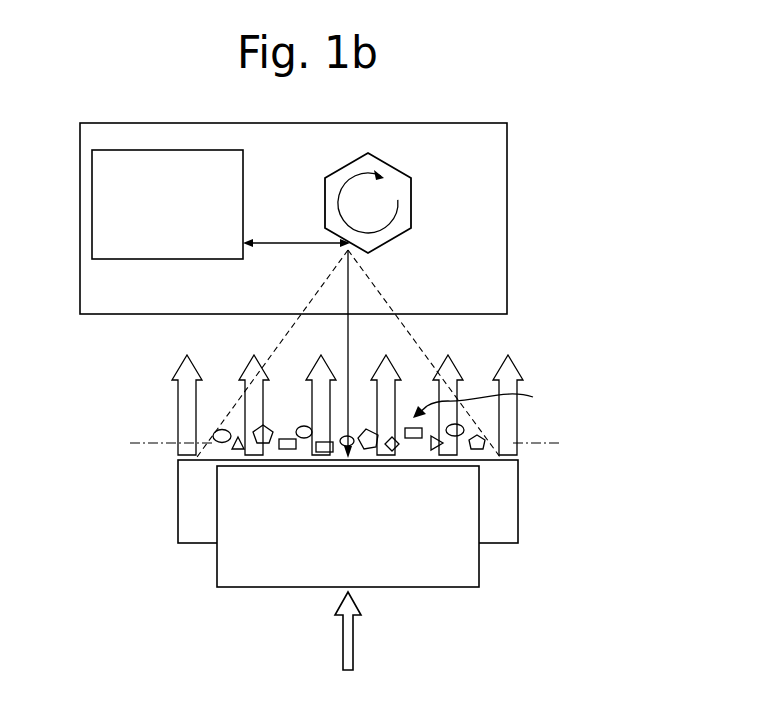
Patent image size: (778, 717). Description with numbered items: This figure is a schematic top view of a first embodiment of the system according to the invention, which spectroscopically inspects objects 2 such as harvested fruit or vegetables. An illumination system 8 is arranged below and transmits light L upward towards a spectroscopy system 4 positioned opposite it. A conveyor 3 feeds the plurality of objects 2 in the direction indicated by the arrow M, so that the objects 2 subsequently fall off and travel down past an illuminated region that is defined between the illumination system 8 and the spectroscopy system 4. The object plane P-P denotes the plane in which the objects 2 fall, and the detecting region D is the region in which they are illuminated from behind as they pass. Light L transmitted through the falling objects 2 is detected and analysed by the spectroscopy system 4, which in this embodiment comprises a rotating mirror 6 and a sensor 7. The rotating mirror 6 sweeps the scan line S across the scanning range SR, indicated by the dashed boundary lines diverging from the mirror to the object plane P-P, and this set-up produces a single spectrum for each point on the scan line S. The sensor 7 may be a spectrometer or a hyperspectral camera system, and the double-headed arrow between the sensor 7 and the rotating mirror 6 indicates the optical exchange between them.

The objects 2 is at (214, 431).
The conveyor 3 is at (453, 557).
The spectroscopy system 4 is at (80, 275).
The rotating mirror 6 is at (403, 205).
The sensor 7 is at (138, 168).
The illumination system 8 is at (200, 505).
The scan line S is at (348, 333).
The scanning range SR is at (282, 335).
The light L is at (532, 356).
The detecting region D is at (486, 400).
The object plane P is at (345, 443).
The direction of conveyor feed M is at (358, 631).